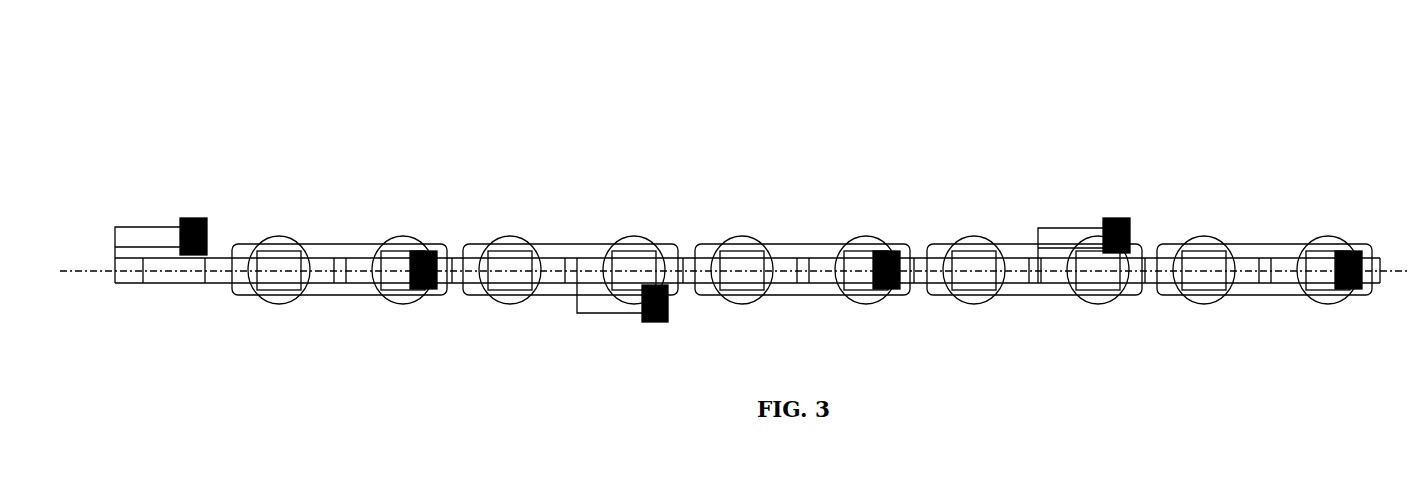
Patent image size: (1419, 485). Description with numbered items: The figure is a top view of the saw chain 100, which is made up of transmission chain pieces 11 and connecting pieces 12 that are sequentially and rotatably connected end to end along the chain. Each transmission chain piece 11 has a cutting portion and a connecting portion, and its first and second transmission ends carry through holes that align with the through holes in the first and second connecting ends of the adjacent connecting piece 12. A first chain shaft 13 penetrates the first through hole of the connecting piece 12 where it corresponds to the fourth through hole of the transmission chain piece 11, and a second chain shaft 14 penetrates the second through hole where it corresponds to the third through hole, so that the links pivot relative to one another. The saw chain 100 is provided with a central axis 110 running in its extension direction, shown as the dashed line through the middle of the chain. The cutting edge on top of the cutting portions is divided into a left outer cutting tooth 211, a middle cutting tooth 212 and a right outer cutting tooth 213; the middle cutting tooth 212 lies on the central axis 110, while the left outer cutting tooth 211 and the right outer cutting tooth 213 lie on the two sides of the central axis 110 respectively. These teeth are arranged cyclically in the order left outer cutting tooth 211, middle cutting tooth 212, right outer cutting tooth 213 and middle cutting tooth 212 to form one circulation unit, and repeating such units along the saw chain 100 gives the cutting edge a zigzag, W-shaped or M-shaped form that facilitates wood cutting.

The saw chain 100 is at (183, 99).
The central axis 110 is at (83, 273).
The transmission chain piece 11 is at (462, 265).
The connecting piece 12 is at (805, 256).
The first chain shaft 13 is at (518, 238).
The second chain shaft 14 is at (638, 238).
The left outer cutting tooth 211 is at (207, 247).
The middle cutting tooth 212 is at (437, 290).
The right outer cutting tooth 213 is at (668, 312).